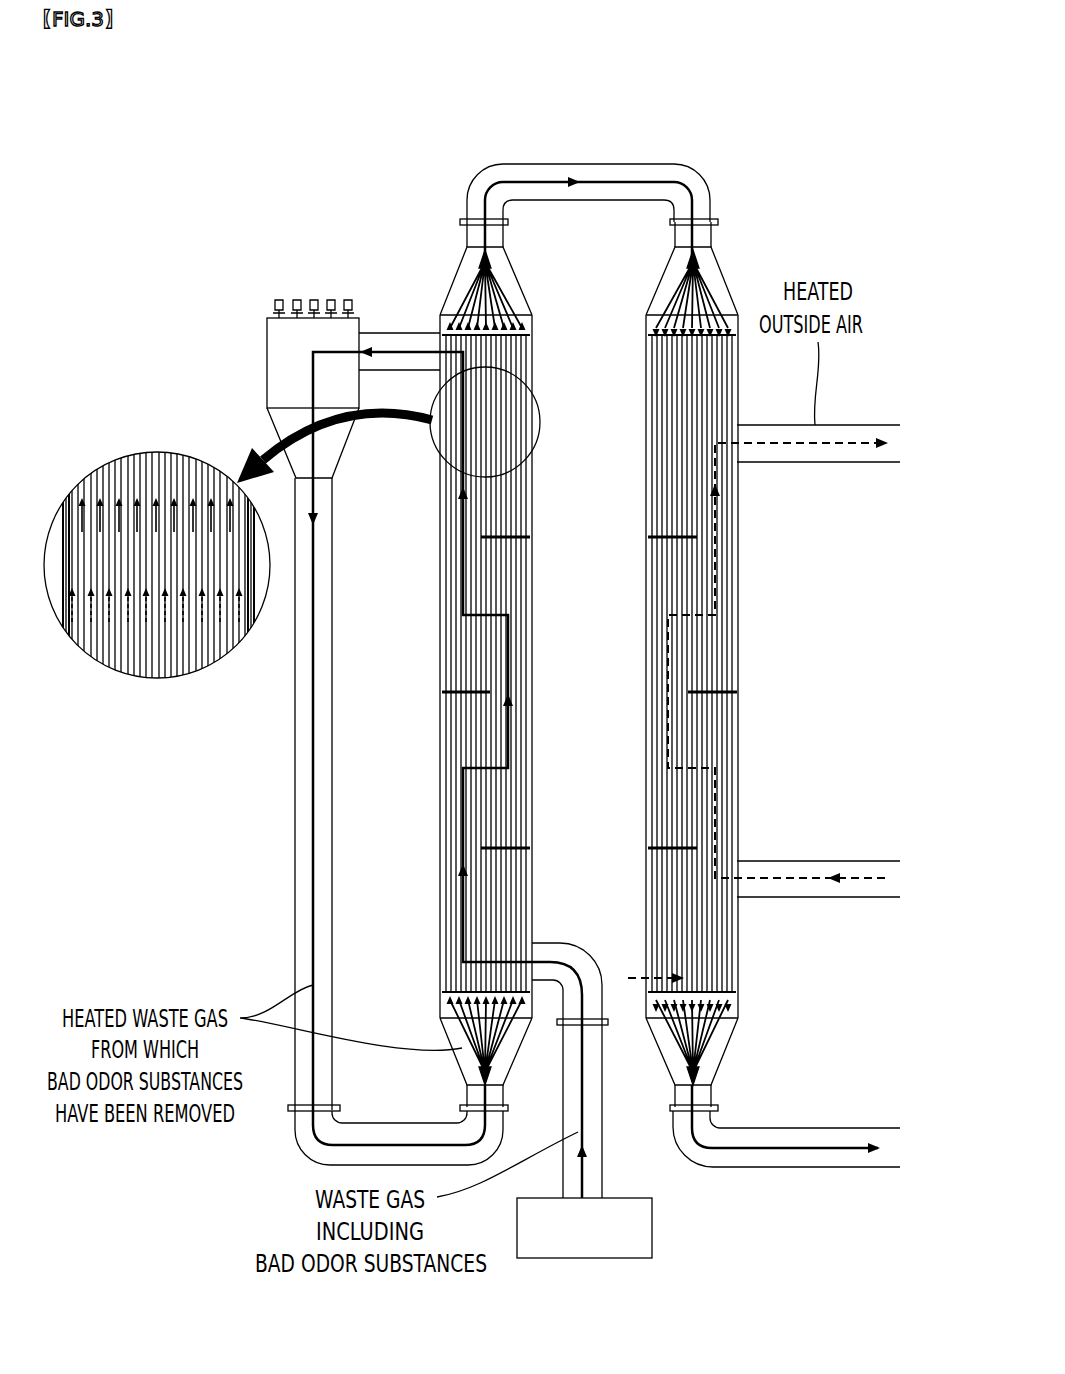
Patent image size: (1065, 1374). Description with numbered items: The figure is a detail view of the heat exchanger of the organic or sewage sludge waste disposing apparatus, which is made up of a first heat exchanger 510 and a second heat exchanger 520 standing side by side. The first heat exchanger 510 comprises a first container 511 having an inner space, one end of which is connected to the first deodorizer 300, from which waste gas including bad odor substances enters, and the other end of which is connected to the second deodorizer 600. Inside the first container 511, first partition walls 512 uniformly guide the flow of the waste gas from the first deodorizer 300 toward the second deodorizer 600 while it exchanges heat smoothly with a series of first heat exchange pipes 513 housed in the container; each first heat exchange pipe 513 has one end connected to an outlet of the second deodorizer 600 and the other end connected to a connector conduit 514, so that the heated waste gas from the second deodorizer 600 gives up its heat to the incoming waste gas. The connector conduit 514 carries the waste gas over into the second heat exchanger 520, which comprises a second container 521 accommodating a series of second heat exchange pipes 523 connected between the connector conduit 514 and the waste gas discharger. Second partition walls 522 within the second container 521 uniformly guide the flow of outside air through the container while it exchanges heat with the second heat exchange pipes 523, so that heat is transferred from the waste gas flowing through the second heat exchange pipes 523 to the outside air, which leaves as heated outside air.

The first deodorizer 300 is at (662, 1229).
The first heat exchanger 510 is at (449, 275).
The first container 511 is at (532, 515).
The first partition walls 512 is at (480, 848).
The first heat exchange pipes 513 is at (532, 622).
The connector conduit 514 is at (588, 150).
The second heat exchanger 520 is at (722, 275).
The second container 521 is at (737, 515).
The second partition walls 522 is at (698, 848).
The second heat exchange pipes 523 is at (737, 622).
The second deodorizer 600 is at (313, 285).